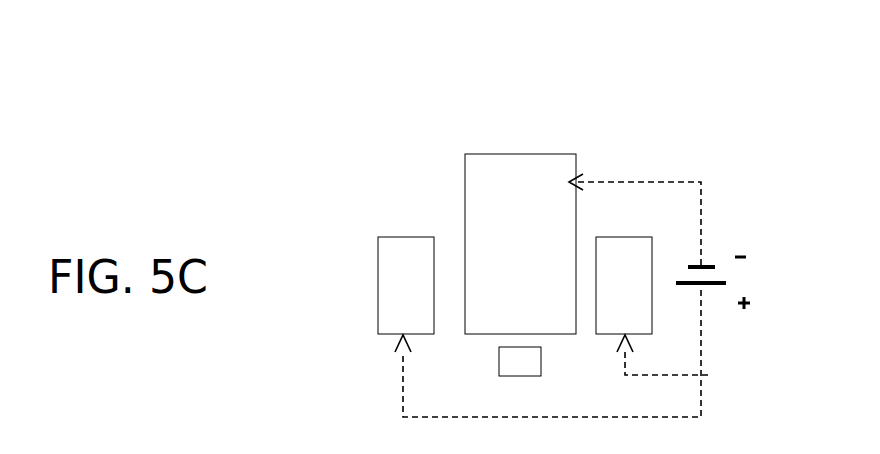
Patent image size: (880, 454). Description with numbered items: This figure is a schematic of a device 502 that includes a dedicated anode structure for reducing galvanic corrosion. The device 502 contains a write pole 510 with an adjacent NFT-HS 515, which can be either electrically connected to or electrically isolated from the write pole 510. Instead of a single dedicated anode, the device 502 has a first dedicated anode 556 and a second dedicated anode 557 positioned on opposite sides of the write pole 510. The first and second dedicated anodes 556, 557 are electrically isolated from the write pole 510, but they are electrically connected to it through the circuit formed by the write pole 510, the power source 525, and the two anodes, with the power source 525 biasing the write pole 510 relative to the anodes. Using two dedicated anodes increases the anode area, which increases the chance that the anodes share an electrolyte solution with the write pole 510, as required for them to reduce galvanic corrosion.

The device 502 is at (352, 190).
The write pole 510 is at (538, 262).
The first dedicated anode 556 is at (425, 290).
The second dedicated anode 557 is at (649, 290).
The power source 525 is at (726, 283).
The NFT-HS 515 is at (511, 361).